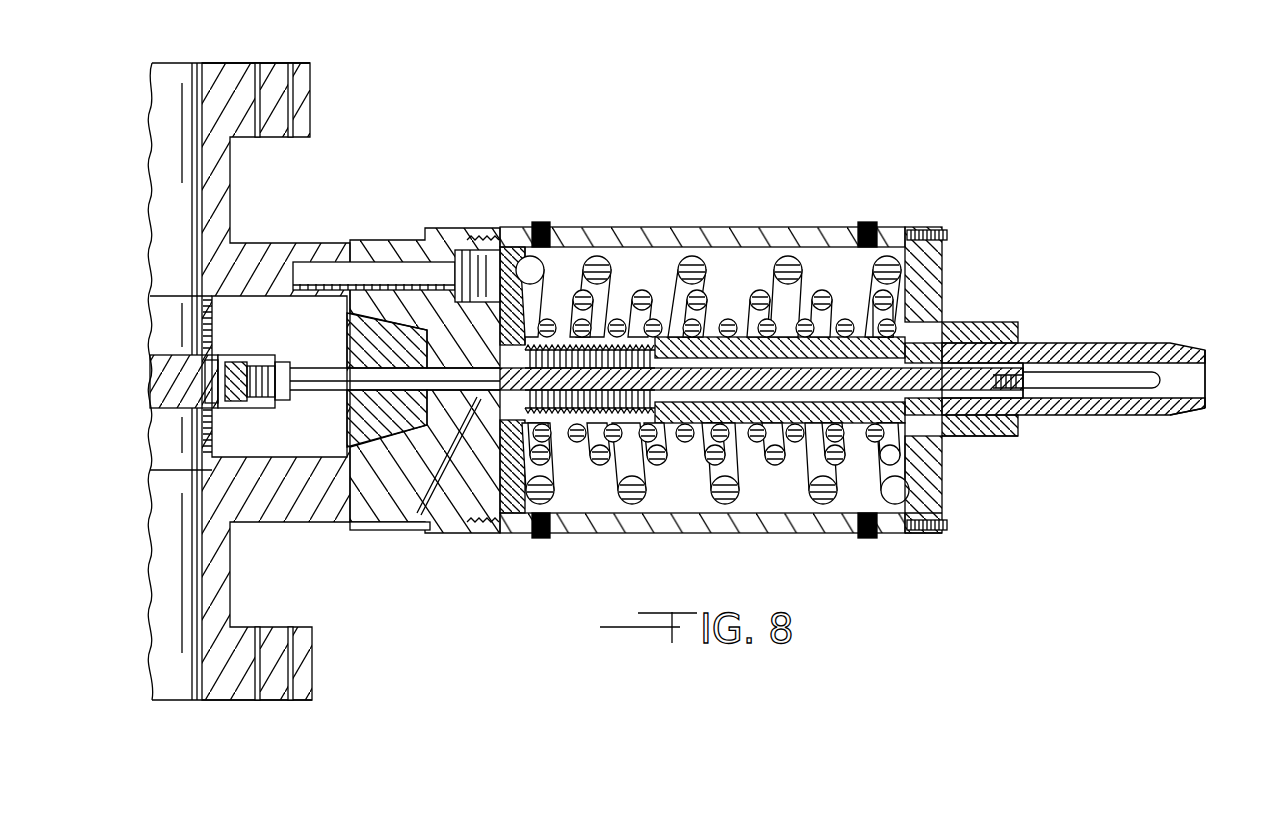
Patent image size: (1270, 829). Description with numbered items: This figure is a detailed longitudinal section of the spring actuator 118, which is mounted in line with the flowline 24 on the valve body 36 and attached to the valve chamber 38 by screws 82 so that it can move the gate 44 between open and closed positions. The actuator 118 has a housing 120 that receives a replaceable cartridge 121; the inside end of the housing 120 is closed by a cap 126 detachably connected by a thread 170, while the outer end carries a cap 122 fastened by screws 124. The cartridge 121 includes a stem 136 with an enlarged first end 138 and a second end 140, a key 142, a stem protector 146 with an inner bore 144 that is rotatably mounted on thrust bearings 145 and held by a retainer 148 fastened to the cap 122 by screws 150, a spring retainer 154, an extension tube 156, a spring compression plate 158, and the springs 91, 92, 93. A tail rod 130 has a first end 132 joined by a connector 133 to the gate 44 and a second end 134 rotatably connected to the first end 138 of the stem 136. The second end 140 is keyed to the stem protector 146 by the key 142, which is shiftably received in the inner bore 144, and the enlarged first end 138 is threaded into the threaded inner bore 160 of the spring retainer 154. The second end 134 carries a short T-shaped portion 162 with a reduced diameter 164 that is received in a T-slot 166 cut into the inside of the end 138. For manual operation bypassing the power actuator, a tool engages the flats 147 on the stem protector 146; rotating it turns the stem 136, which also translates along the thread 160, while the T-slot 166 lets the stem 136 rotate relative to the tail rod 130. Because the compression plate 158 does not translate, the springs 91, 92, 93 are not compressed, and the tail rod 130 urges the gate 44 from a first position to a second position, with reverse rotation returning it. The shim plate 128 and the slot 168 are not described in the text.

The flowline 24 is at (174, 684).
The valve body 36 is at (222, 63).
The valve chamber 38 is at (263, 241).
The gate 44 is at (150, 375).
The screws 82 is at (330, 266).
The spring 91 is at (840, 500).
The spring 92 is at (785, 455).
The spring 93 is at (870, 450).
The spring actuator 118 is at (714, 150).
The housing 120 is at (777, 227).
The replaceable cartridge 121 is at (705, 305).
The cap 122 is at (940, 275).
The screws 124 is at (945, 558).
The cap 126 is at (395, 238).
The shim plate 128 is at (415, 532).
The tail rod 130 is at (343, 362).
The first end 132 is at (297, 400).
The connector 133 is at (257, 357).
The second end 134 is at (403, 390).
The stem 136 is at (680, 490).
The first end 138 is at (525, 345).
The second end 140 is at (985, 345).
The key 142 is at (1025, 400).
The inner bore 144 is at (1188, 410).
The thrust bearings 145 is at (955, 330).
The stem protector 146 is at (1140, 343).
The flats 147 is at (1183, 416).
The retainer 148 is at (1020, 438).
The screws 150 is at (960, 500).
The spring retainer 154 is at (668, 245).
The extension tube 156 is at (850, 330).
The spring compression plate 158 is at (515, 330).
The threaded inner bore 160 is at (637, 247).
The T-shaped portion 162 is at (505, 520).
The reduced diameter 164 is at (455, 520).
The T-slot 166 is at (515, 500).
The keyway slot 168 is at (1105, 372).
The thread 170 is at (470, 240).